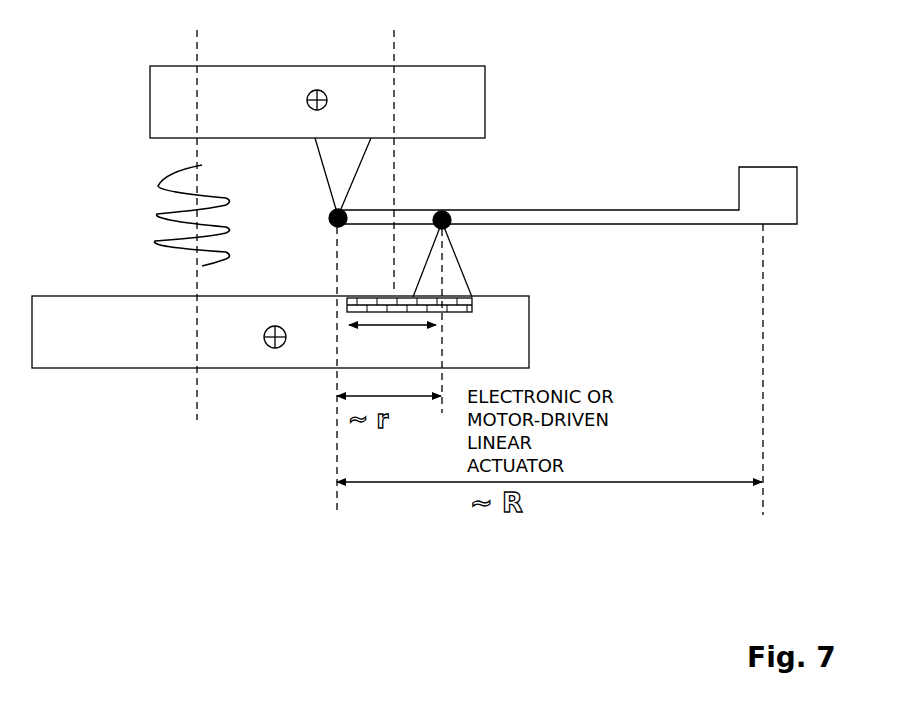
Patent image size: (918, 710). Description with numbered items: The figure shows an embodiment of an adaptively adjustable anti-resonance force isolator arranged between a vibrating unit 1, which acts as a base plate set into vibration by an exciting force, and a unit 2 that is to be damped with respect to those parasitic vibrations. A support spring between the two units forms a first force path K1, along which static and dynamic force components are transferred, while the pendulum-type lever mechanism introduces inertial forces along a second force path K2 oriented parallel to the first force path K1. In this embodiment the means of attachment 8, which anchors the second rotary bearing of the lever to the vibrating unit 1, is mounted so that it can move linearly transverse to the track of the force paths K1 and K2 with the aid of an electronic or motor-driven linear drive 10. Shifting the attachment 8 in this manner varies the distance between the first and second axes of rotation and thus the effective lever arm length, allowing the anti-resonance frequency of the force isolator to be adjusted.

The vibrating unit 1 is at (280, 332).
The unit to be damped 2 is at (317, 102).
The attachment 8 is at (463, 267).
The motor-driven linear drive 10 is at (363, 300).
The first force path K1 is at (222, 223).
The second force path K2 is at (422, 160).